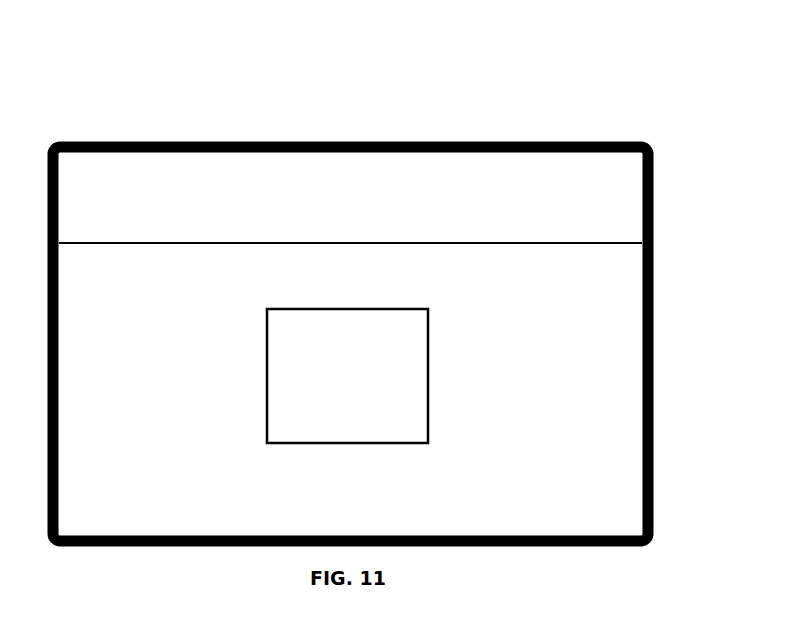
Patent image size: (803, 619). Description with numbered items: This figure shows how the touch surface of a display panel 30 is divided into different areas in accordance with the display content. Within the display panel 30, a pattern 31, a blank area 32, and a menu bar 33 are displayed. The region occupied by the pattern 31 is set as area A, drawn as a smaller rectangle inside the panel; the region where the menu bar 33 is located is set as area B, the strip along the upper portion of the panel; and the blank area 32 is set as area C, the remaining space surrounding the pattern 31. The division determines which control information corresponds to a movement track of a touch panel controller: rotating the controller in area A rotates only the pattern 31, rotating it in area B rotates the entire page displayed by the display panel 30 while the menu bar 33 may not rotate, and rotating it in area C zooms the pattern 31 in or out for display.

The display panel 30 is at (340, 134).
The pattern 31 is at (415, 300).
The blank area 32 is at (158, 286).
The menu bar 33 is at (492, 173).